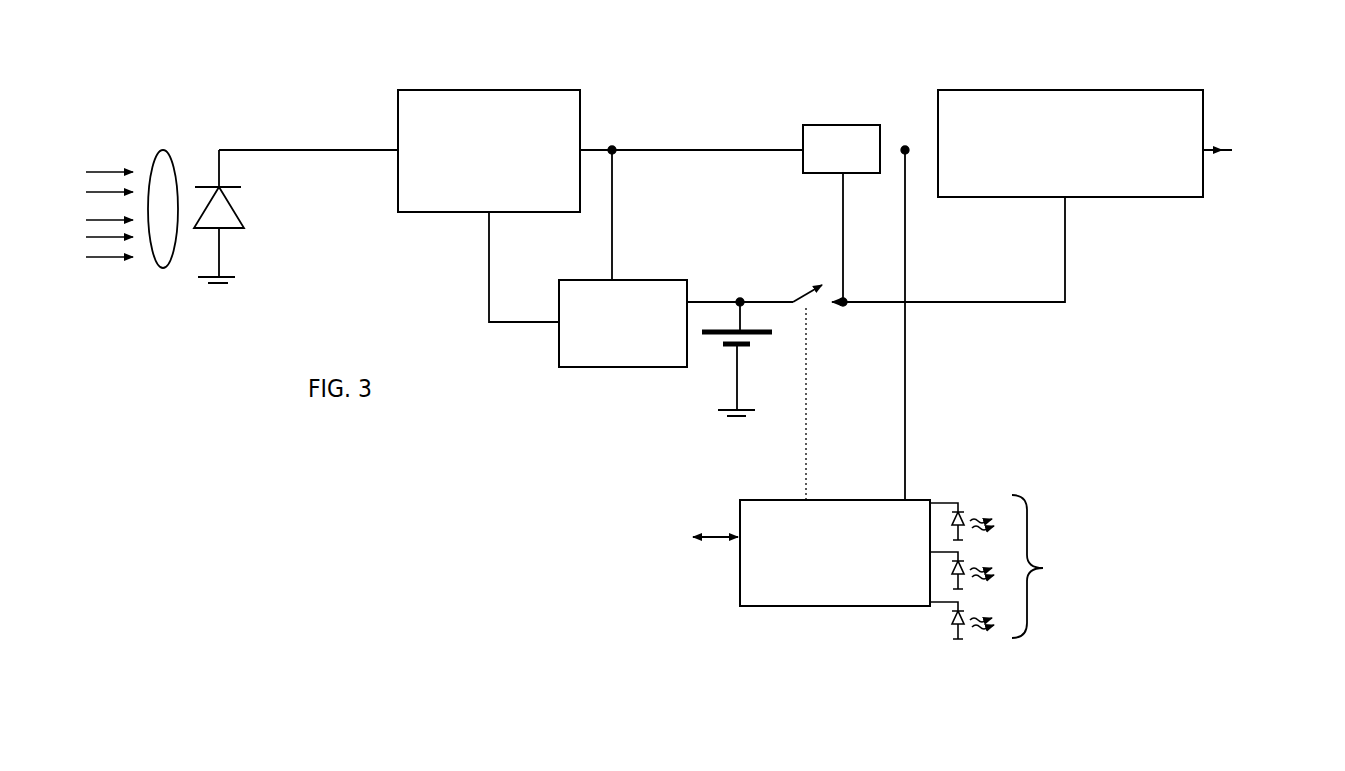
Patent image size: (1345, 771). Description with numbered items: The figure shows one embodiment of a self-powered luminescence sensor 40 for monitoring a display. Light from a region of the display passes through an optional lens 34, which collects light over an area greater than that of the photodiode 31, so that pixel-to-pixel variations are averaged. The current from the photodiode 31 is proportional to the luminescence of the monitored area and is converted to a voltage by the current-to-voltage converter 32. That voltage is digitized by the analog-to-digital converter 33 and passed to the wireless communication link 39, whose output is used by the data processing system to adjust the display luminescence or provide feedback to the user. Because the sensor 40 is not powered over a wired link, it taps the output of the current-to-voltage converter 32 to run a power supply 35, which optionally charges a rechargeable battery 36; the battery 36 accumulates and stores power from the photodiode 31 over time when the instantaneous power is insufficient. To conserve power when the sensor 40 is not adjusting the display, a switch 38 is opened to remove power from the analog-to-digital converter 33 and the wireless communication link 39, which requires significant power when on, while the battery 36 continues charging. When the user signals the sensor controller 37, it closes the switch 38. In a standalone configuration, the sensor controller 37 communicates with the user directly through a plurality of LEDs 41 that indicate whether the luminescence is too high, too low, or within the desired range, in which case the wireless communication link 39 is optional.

The sensor 40 is at (196, 48).
The lens 34 is at (163, 150).
The photodiode 31 is at (232, 213).
The current-to-voltage converter 32 is at (498, 90).
The analog-to-digital converter (ADC) 33 is at (843, 125).
The power supply 35 is at (662, 280).
The rechargeable battery 36 is at (768, 338).
The switch 38 is at (803, 290).
The sensor controller 37 is at (766, 500).
The wireless communication link 39 is at (1080, 90).
The LEDs 41 is at (1043, 568).